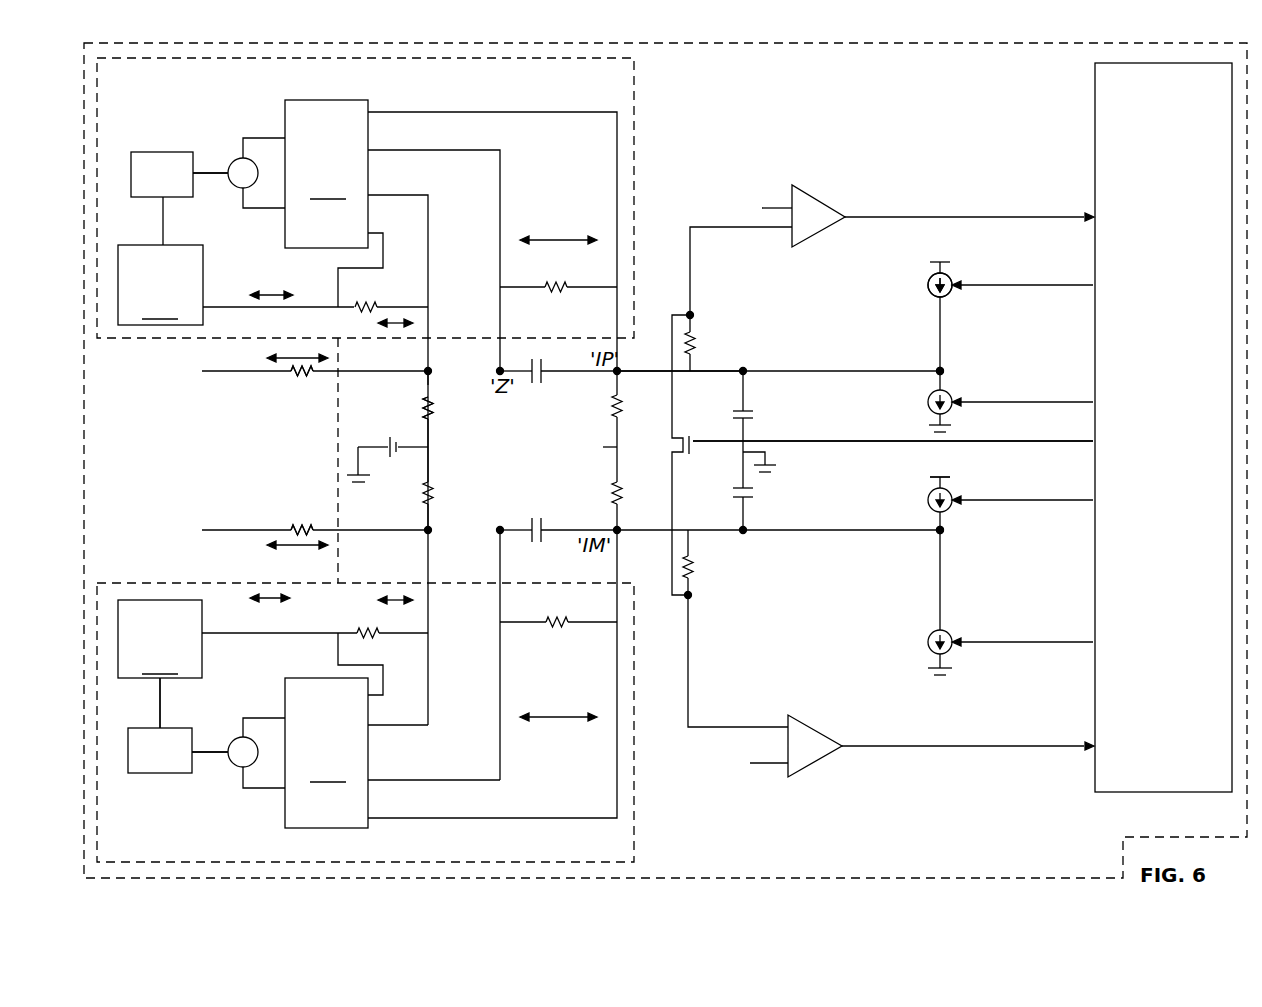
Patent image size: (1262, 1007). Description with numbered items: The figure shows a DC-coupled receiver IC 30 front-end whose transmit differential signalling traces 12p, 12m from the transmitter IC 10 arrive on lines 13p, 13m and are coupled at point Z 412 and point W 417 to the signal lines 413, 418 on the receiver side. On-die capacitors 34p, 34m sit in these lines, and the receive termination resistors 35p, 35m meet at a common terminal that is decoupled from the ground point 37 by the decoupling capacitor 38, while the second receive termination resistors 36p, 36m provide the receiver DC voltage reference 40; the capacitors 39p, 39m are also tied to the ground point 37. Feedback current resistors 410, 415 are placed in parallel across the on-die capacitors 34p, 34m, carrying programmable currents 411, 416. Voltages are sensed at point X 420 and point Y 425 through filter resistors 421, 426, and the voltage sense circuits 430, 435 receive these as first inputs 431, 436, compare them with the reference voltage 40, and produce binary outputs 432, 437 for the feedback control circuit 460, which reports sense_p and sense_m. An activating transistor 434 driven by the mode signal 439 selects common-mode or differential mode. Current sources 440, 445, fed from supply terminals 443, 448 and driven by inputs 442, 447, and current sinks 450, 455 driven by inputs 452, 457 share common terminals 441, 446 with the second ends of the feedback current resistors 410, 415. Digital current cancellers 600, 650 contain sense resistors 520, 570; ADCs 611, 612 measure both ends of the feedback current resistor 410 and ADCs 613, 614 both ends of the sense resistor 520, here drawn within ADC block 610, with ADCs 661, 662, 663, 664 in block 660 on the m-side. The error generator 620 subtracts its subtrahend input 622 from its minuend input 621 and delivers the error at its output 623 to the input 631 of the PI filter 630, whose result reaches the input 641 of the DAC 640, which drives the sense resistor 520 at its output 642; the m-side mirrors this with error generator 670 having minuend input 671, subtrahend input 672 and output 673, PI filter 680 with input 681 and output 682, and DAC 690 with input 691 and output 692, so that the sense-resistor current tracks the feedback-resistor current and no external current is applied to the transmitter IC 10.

The transmitter IC 10 is at (176, 463).
The transmit differential signalling trace 12p is at (305, 378).
The transmit differential signalling trace 12m is at (315, 525).
The transmitter positive line 13p is at (285, 374).
The transmitter negative line 13m is at (212, 532).
The receiver IC 30 is at (1111, 873).
The on-die capacitor 34p is at (532, 356).
The on-die capacitor 34m is at (535, 545).
The receive termination resistor 35p is at (435, 418).
The receive termination resistor 35m is at (435, 492).
The receive termination resistor 36p is at (612, 398).
The receive termination resistor 36m is at (612, 490).
The ground point 37 is at (362, 485).
The decoupling capacitor 38 is at (392, 435).
The capacitor 39p is at (750, 405).
The capacitor 39m is at (755, 497).
The receiver DC voltage reference 40 is at (603, 450).
The feedback current resistor 410 is at (555, 292).
The programmable current 411 is at (561, 225).
The point Z 412 is at (440, 400).
The positive signal line IP 413 is at (620, 370).
The feedback current resistor 415 is at (558, 630).
The programmable current 416 is at (835, 533).
The point W 417 is at (498, 538).
The negative signal line IM 418 is at (620, 534).
The point X 420 is at (700, 312).
The filter resistor 421 is at (700, 340).
The point Y 425 is at (692, 600).
The filter resistor 426 is at (695, 585).
The voltage sense circuit 430 is at (810, 190).
The first input 431 is at (692, 222).
The output 432 is at (905, 215).
The activating transistor 434 is at (672, 450).
The voltage sense circuit 435 is at (802, 715).
The first input 436 is at (698, 726).
The output 437 is at (885, 752).
The mode signal 439 is at (1015, 441).
The current source 440 is at (930, 292).
The common terminal 441 is at (945, 370).
The input 442 is at (1022, 284).
The supply terminal 443 is at (942, 260).
The current source 445 is at (928, 495).
The common terminal 446 is at (945, 535).
The input 447 is at (1072, 498).
The supply terminal 448 is at (942, 476).
The current sink 450 is at (928, 405).
The input 452 is at (1022, 400).
The current sink 455 is at (928, 635).
The input 457 is at (1070, 640).
The feedback control circuit 460 is at (1224, 788).
The sense resistor 520 is at (372, 302).
The sense resistor 570 is at (365, 628).
The digital current canceller 600 is at (612, 90).
The ADC 610 is at (326, 174).
The analog-to-digital converter 611 is at (590, 118).
The analog-to-digital converter 612 is at (450, 150).
The analog-to-digital converter 613 is at (426, 193).
The analog-to-digital converter 614 is at (378, 235).
The error generator 620 is at (228, 160).
The first minuend input 621 is at (236, 140).
The second subtrahend input 622 is at (240, 195).
The output 623 is at (222, 170).
The proportional and integral filter 630 is at (165, 152).
The input 631 is at (215, 172).
The digital-to-analog converter 640 is at (160, 285).
The input 641 is at (168, 245).
The DAC output line 642 is at (203, 312).
The digital current canceller 650 is at (604, 856).
The ADC 660 is at (326, 753).
The analog-to-digital converter 661 is at (560, 817).
The analog-to-digital converter 662 is at (412, 782).
The analog-to-digital converter 663 is at (385, 728).
The analog-to-digital converter 664 is at (360, 665).
The error generator 670 is at (228, 740).
The minuend input 671 is at (240, 780).
The subtrahend input 672 is at (240, 722).
The output 673 is at (222, 765).
The PI filter 680 is at (158, 775).
The input 681 is at (200, 755).
The output 682 is at (163, 205).
The DAC 690 is at (160, 639).
The input 691 is at (160, 690).
The output 692 is at (203, 635).